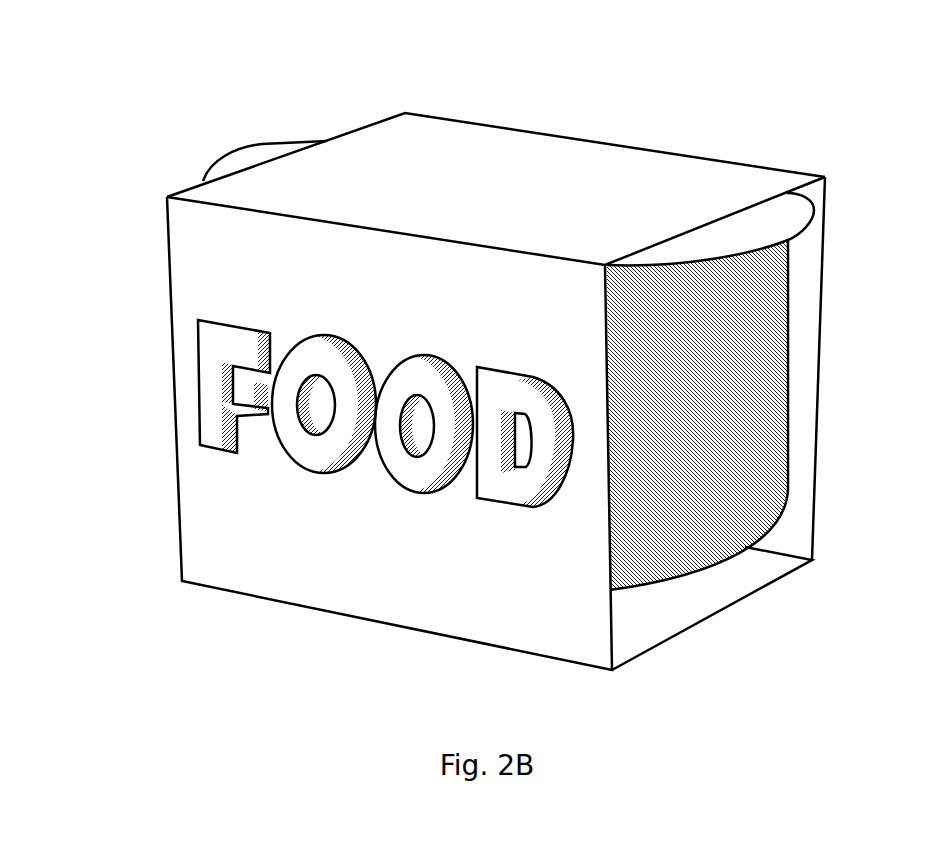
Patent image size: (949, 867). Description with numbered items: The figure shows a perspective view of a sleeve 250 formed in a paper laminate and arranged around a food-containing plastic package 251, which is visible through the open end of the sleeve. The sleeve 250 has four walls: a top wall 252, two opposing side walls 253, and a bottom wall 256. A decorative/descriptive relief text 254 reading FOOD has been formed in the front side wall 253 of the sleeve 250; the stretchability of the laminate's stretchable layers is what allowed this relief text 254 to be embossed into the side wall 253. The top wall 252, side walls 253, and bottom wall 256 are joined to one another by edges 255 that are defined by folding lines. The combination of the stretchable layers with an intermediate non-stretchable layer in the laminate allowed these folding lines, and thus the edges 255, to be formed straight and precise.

The sleeve 250 is at (639, 133).
The food-containing plastic package 251 is at (730, 318).
The top wall 252 is at (697, 180).
The side wall 253 is at (810, 357).
The relief text 254 is at (217, 391).
The edges 255 is at (247, 211).
The bottom wall 256 is at (662, 615).